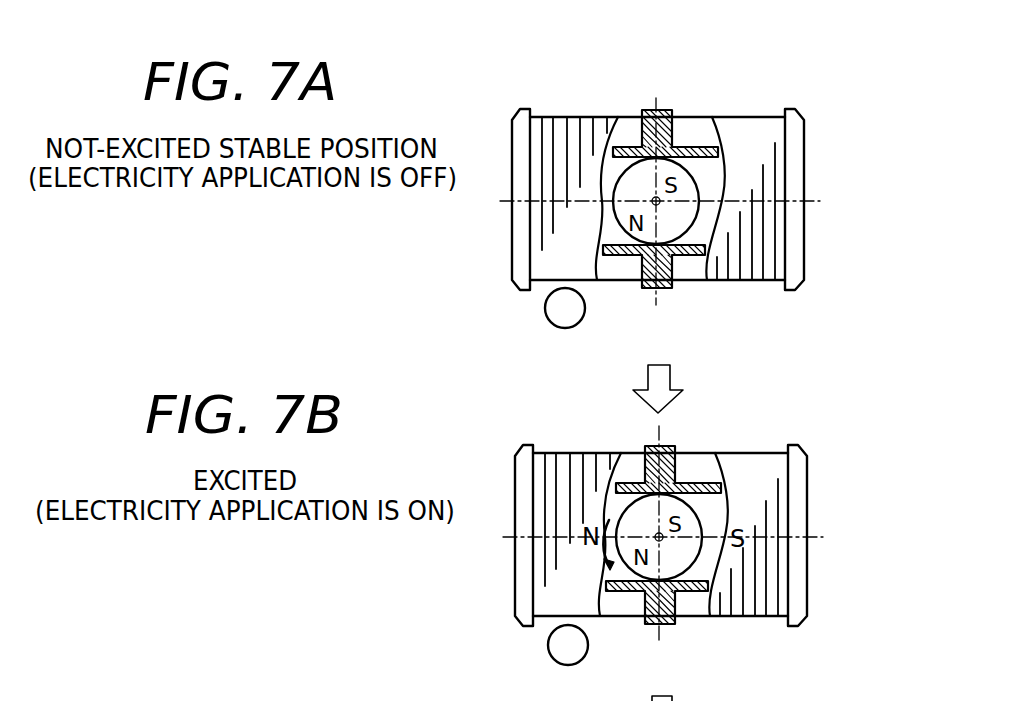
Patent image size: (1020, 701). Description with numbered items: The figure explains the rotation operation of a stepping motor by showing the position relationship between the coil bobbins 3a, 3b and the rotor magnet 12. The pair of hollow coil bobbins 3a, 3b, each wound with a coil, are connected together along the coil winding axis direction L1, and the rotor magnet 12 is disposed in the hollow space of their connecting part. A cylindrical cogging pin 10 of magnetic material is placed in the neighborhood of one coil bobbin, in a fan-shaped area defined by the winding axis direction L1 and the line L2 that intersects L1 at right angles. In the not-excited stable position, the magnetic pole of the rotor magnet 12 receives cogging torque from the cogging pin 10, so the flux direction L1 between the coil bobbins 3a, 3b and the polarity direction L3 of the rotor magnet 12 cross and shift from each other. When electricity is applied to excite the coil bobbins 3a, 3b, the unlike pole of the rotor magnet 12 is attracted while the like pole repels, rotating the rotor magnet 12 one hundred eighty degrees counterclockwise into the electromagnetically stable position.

In FIG. 7A, the coil bobbin 3a is at (559, 131).
In FIG. 7B, the coil bobbin 3a is at (575, 485).
In FIG. 7A, the coil bobbin 3b is at (763, 140).
In FIG. 7B, the coil bobbin 3b is at (807, 536).
In FIG. 7A, the cogging pin 10 is at (555, 312).
In FIG. 7B, the cogging pin 10 is at (527, 655).
In FIG. 7A, the rotor magnet 12 is at (682, 281).
In FIG. 7B, the rotor magnet 12 is at (663, 564).
In FIG. 7A, the coil winding axis direction L1 is at (676, 200).
In FIG. 7B, the coil winding axis direction L1 is at (679, 536).
In FIG. 7A, the line intersecting at right angles with the winding axis direction L2 is at (655, 187).
In FIG. 7B, the line intersecting at right angles with the winding axis direction L2 is at (675, 524).
In FIG. 7A, the polarity direction L3 is at (695, 159).
In FIG. 7B, the polarity direction L3 is at (709, 447).